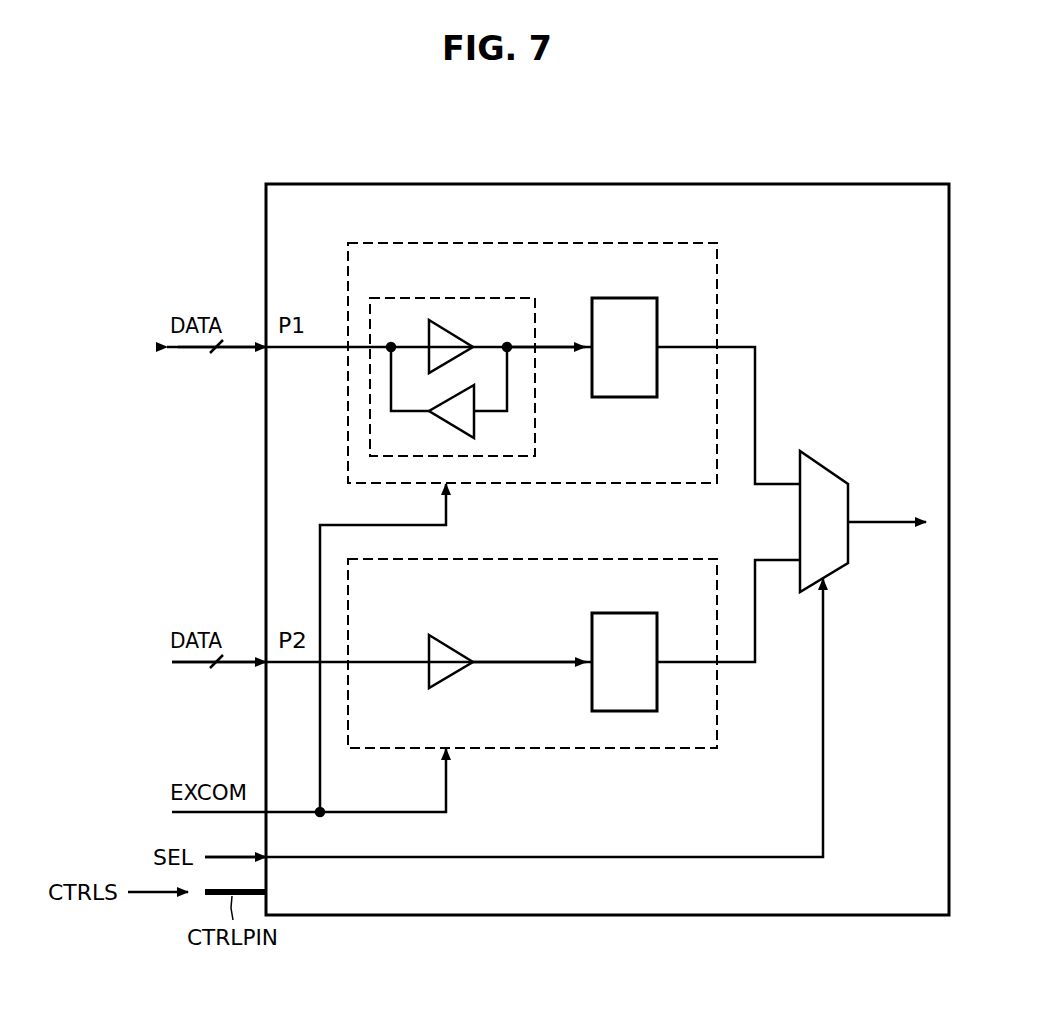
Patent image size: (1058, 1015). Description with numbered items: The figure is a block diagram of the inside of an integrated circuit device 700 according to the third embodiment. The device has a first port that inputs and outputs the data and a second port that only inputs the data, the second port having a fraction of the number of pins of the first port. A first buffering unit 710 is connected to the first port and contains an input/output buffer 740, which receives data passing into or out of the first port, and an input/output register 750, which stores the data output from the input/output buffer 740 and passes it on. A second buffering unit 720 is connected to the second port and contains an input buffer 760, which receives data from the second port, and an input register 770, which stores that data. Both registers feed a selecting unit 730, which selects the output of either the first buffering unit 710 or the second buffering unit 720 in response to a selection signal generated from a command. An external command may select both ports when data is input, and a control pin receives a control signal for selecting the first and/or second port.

The integrated circuit device 700 is at (827, 184).
The first buffering unit 710 is at (545, 243).
The second buffering unit 720 is at (547, 559).
The selecting unit 730 is at (829, 466).
The input/output buffer 740 is at (448, 298).
The input/output register 750 is at (628, 298).
The input buffer 760 is at (455, 648).
The input register 770 is at (625, 613).